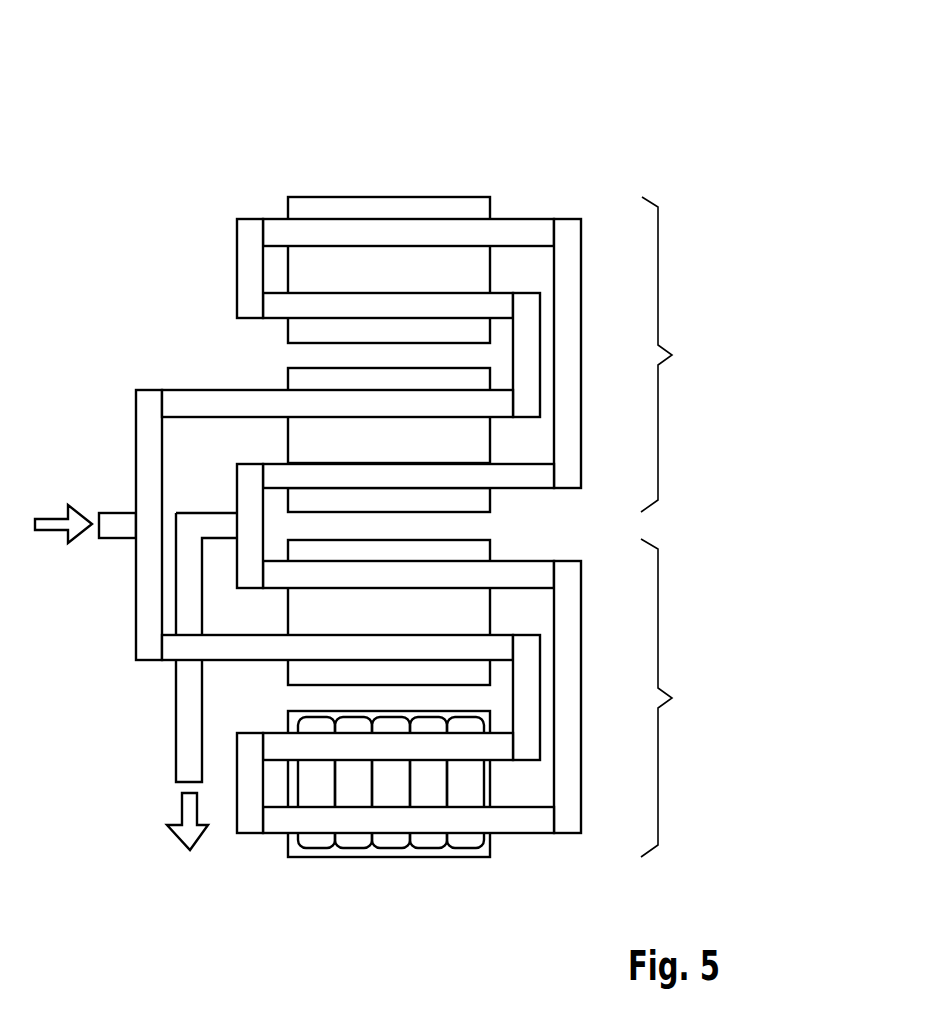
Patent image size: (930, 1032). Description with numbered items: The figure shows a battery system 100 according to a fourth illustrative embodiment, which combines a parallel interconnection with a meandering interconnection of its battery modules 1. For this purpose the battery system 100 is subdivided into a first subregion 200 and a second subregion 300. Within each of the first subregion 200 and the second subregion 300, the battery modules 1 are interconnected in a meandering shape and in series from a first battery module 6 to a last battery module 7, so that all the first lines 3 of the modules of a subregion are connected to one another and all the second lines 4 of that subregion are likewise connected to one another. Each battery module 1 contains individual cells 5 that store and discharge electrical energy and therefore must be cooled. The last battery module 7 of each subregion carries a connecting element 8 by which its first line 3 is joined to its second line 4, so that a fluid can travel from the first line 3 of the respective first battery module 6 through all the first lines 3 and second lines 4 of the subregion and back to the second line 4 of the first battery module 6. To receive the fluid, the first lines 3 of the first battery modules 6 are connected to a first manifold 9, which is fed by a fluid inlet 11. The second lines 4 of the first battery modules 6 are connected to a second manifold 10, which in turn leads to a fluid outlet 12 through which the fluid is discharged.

The battery module 1 is at (388, 208).
The first line 3 is at (275, 305).
The second line 4 is at (275, 232).
The individual cells 5 is at (355, 842).
The first battery module 6 is at (498, 502).
The last battery module 7 is at (508, 204).
The connecting element 8 is at (248, 265).
The first manifold 9 is at (148, 597).
The second manifold 10 is at (245, 485).
The fluid inlet 11 is at (48, 513).
The fluid outlet 12 is at (180, 808).
The battery system 100 is at (518, 98).
The first subregion 200 is at (681, 354).
The second subregion 300 is at (681, 698).